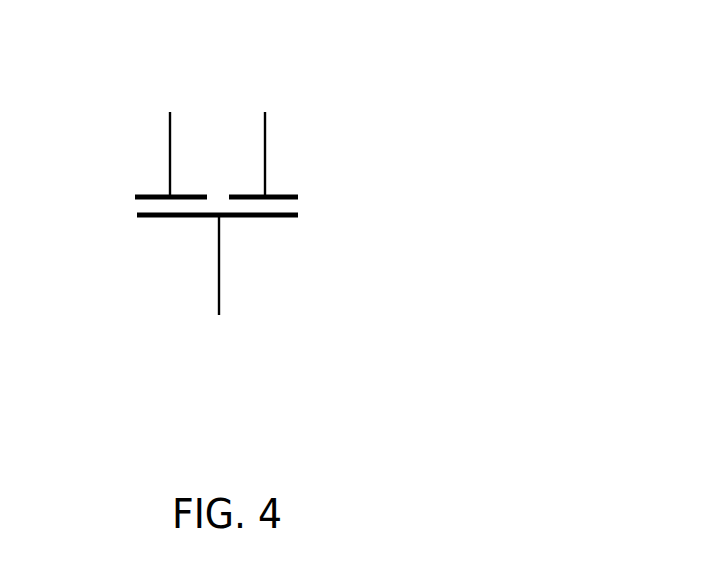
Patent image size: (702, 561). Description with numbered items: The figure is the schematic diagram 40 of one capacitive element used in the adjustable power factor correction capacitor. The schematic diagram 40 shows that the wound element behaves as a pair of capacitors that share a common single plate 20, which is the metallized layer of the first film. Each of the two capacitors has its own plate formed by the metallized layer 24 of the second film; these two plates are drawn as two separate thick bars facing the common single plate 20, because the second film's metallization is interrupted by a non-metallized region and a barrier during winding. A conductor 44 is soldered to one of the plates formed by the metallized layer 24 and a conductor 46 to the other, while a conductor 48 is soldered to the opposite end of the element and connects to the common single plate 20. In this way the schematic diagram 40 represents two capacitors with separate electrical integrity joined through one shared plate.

The schematic diagram 40 is at (478, 90).
The conductor 44 is at (170, 130).
The conductor 46 is at (265, 140).
The metallized layer of the second film 24 is at (148, 190).
The common single plate 20 is at (288, 217).
The conductor 48 is at (215, 285).